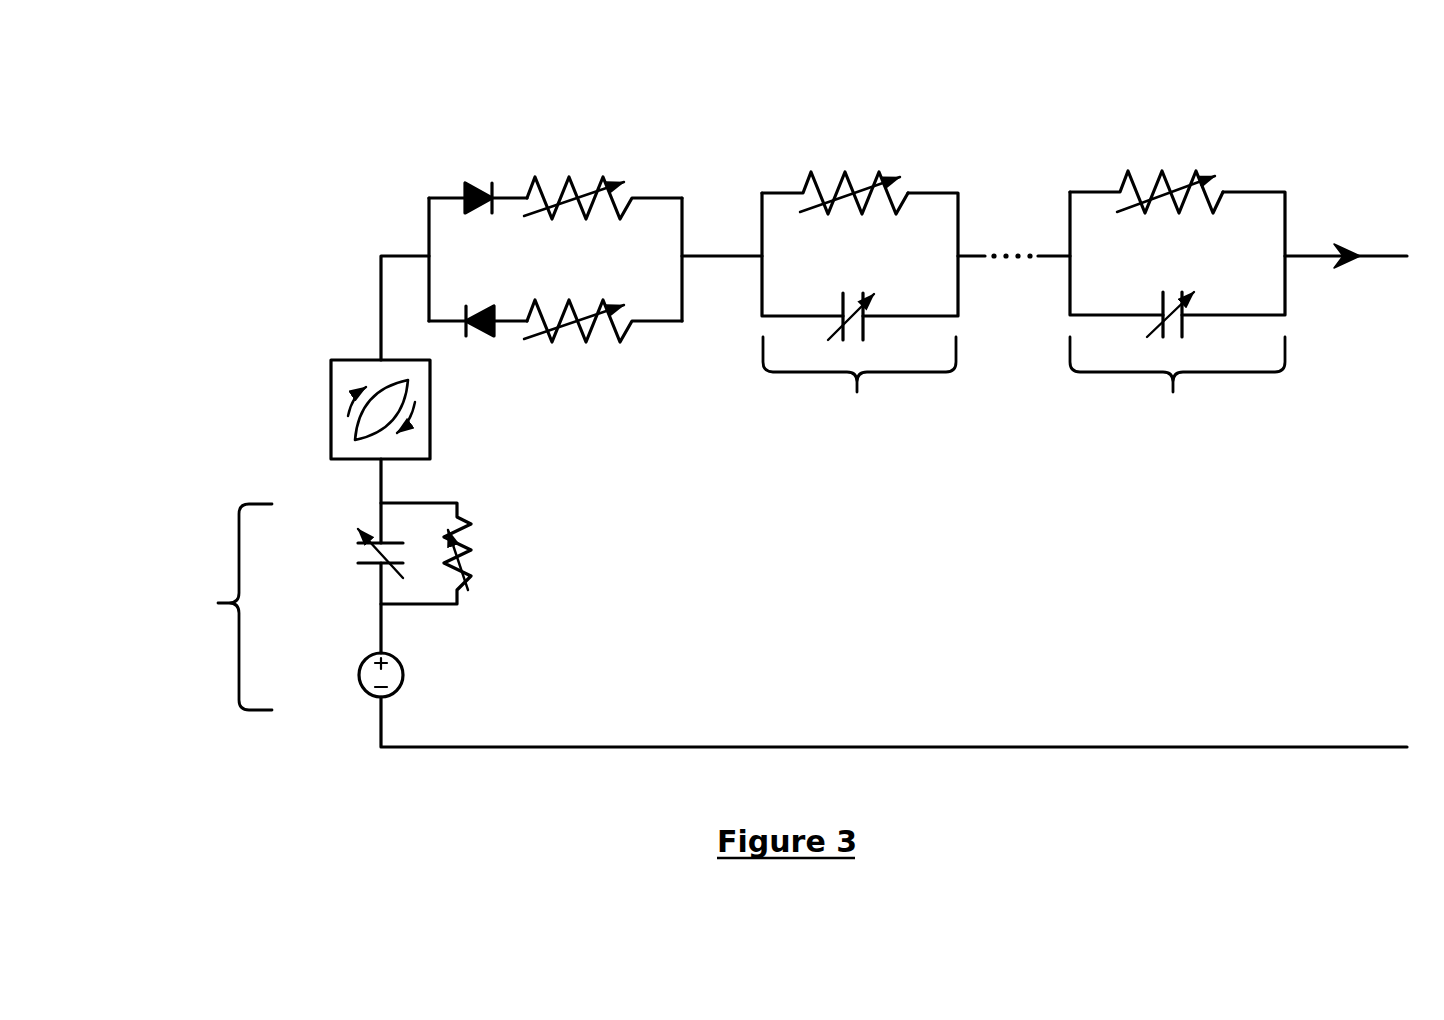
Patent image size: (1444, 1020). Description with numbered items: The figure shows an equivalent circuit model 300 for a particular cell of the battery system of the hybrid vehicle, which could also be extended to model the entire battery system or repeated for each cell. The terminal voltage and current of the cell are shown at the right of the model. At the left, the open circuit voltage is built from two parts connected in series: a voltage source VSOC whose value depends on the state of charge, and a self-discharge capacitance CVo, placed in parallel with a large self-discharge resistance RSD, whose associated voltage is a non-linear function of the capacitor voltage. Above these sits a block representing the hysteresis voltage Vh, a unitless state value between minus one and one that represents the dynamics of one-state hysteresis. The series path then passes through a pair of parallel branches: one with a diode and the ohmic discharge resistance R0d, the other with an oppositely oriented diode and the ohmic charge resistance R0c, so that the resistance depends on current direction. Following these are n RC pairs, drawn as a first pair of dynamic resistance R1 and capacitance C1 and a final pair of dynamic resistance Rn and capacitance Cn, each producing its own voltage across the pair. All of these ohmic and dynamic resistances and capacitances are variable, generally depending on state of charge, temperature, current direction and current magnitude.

The equivalent circuit model 300 is at (316, 139).
The ohmic discharge resistance R0d is at (573, 177).
The ohmic charge resistance R0c is at (574, 297).
The dynamic resistance R1 is at (835, 171).
The capacitance C1 is at (851, 290).
The dynamic resistance Rn is at (1146, 173).
The capacitance Cn is at (1170, 288).
The hysteresis voltage Vh is at (359, 409).
The self-discharge capacitance CVo is at (341, 555).
The self-discharge resistance RSD is at (466, 553).
The SOC-dependent voltage component VSOC is at (335, 676).